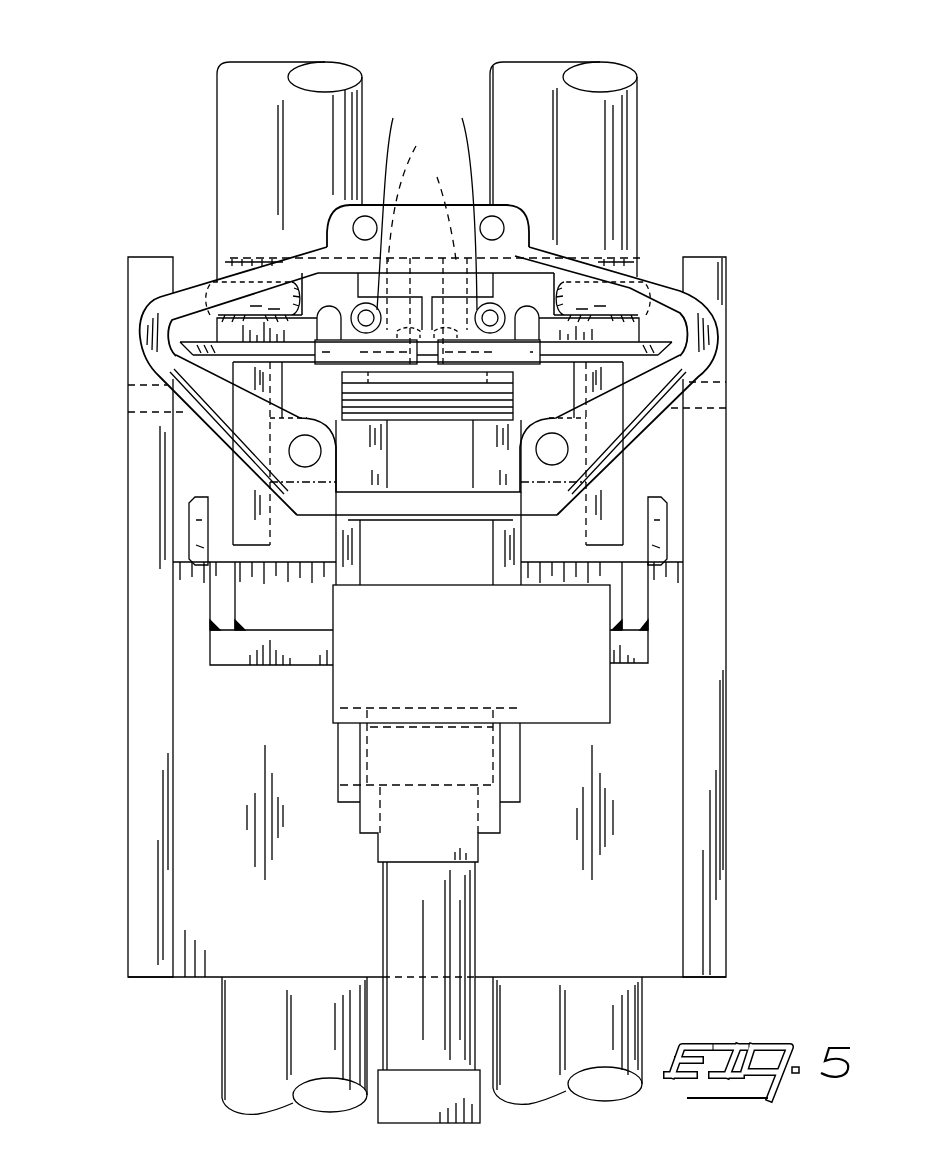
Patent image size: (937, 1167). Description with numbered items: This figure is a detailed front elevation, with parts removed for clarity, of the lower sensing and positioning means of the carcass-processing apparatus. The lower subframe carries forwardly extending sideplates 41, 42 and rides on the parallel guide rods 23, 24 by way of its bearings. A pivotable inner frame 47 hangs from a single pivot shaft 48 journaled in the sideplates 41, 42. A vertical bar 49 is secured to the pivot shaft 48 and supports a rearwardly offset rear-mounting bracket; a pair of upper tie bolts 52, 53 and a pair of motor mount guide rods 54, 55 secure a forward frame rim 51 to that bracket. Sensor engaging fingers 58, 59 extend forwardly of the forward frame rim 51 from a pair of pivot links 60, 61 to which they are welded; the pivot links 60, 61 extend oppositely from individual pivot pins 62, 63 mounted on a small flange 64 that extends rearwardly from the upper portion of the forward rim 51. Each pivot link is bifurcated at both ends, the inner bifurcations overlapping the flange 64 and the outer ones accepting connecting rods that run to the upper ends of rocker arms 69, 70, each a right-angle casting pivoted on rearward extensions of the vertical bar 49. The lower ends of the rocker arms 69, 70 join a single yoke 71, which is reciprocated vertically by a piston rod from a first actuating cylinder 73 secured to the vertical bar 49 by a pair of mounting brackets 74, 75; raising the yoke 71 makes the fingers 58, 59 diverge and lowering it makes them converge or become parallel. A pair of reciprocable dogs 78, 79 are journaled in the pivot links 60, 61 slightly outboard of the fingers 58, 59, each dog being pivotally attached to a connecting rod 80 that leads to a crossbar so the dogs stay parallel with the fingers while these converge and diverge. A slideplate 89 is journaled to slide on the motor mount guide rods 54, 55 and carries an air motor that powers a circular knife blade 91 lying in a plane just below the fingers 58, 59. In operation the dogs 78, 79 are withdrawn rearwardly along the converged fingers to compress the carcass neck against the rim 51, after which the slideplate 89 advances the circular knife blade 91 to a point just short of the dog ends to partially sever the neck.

The guide rod 23 is at (220, 1033).
The guide rod 24 is at (645, 1020).
The sideplate 41 is at (130, 700).
The sideplate 42 is at (728, 672).
The pivotable inner frame 47 is at (138, 337).
The pivot shaft 48 is at (190, 417).
The vertical bar 49 is at (312, 414).
The forward frame rim 51 is at (262, 442).
The upper tie bolt 52 is at (353, 222).
The upper tie bolt 53 is at (503, 225).
The motor mount guide rod 54 is at (205, 478).
The motor mount guide rod 55 is at (570, 442).
The sensor engaging finger 58 is at (393, 118).
The sensor engaging finger 59 is at (462, 118).
The pivot link 60 is at (217, 260).
The pivot link 61 is at (640, 262).
The pivot pin 62 is at (415, 193).
The pivot pin 63 is at (440, 207).
The flange 64 is at (488, 287).
The rocker arm 69 is at (233, 486).
The rocker arm 70 is at (623, 480).
The yoke 71 is at (247, 667).
The first actuating cylinder 73 is at (402, 1053).
The mounting bracket 74 is at (348, 805).
The mounting bracket 75 is at (508, 803).
The reciprocable dog 78 is at (357, 361).
The reciprocable dog 79 is at (505, 361).
The connecting rod 80 is at (443, 391).
The slideplate 89 is at (528, 418).
The circular knife blade 91 is at (664, 345).